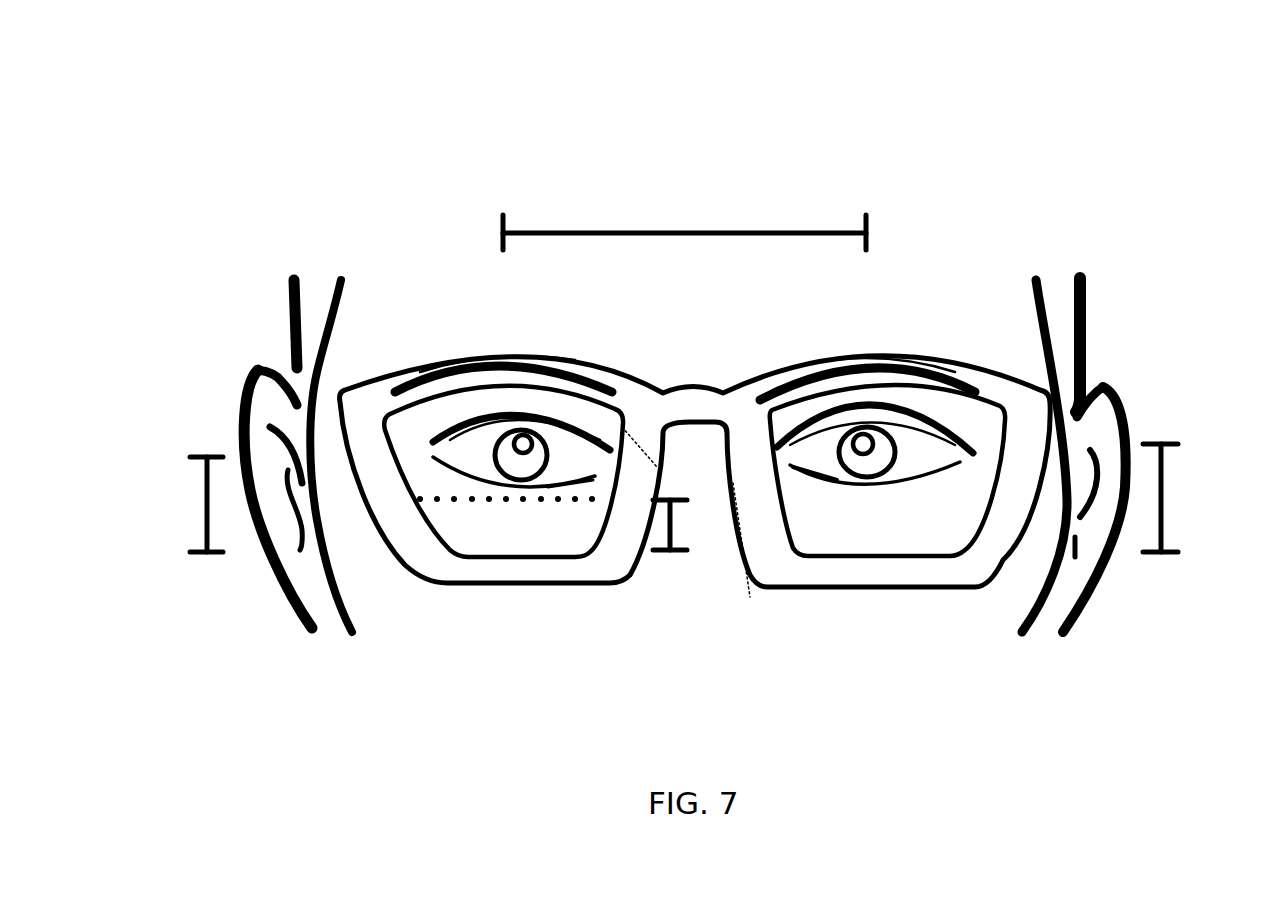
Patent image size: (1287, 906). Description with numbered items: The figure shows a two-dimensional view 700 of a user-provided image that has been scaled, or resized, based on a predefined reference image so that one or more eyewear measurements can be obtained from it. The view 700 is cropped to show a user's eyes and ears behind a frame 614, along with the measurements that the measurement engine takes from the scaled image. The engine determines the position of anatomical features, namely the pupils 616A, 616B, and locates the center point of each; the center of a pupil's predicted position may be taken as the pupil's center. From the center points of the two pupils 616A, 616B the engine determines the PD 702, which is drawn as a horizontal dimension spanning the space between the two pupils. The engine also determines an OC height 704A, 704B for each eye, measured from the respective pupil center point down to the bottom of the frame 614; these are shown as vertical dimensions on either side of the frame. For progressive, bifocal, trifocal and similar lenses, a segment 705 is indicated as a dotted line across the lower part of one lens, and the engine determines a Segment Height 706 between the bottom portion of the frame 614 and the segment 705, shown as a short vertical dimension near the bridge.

The two-dimensional view 700 is at (634, 56).
The frame 614 is at (1000, 372).
The pupil 616A is at (522, 420).
The pupil 616B is at (865, 425).
The PD 702 is at (683, 232).
The OC height 704A is at (205, 497).
The OC height 704B is at (1163, 490).
The segment 705 is at (422, 500).
The Segment Height 706 is at (686, 525).